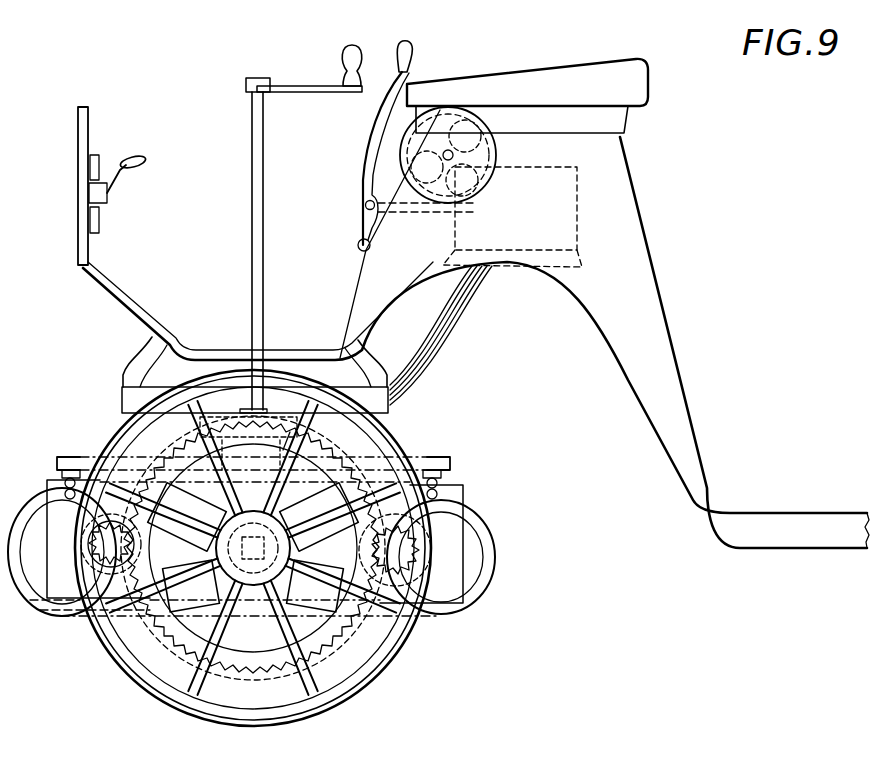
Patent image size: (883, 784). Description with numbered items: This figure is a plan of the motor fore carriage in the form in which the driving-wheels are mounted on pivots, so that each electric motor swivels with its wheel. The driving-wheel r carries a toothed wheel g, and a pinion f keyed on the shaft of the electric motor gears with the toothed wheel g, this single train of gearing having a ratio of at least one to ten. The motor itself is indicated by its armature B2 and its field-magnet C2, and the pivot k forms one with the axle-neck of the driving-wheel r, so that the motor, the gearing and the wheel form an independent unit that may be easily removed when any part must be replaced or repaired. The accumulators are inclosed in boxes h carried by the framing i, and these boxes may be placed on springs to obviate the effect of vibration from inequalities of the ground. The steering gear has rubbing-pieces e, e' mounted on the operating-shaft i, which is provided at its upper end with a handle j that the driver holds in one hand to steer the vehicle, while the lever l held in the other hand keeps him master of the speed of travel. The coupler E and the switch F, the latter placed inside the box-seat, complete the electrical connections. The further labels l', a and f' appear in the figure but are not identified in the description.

The handle j is at (304, 68).
The coupler E is at (118, 193).
The lever arm l' is at (386, 199).
The lever l is at (437, 177).
The switch F is at (512, 217).
The framing i is at (258, 295).
The rubbing-piece e is at (213, 393).
The rubbing-piece e' is at (280, 393).
The shaft a is at (290, 432).
The field-magnet C2 is at (186, 497).
The left pinion f' is at (84, 504).
The armature B2 is at (108, 541).
The box h is at (60, 590).
The pinion f is at (436, 526).
The pivot k is at (445, 582).
The toothed wheel g is at (318, 640).
The driving-wheel r is at (343, 682).